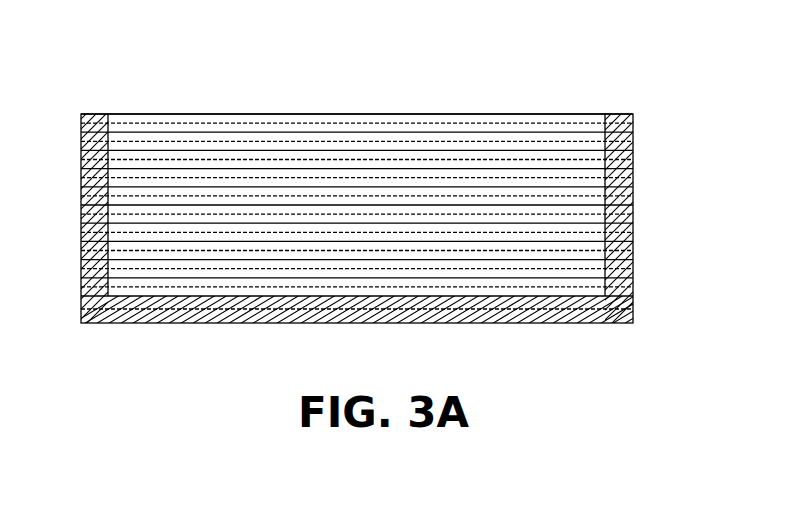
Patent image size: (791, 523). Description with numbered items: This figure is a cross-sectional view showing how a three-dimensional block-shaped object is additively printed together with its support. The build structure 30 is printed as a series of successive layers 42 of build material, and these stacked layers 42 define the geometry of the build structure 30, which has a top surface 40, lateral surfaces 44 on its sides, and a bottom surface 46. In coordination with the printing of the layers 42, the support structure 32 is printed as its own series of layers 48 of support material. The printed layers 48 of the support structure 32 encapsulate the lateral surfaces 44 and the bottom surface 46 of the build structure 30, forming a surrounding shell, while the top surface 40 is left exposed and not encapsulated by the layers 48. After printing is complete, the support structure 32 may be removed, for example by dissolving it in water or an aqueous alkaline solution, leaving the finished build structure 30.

The build structure 30 is at (432, 82).
The support structure 32 is at (647, 168).
The top surface 40 is at (278, 113).
The layers 42 is at (152, 143).
The lateral surfaces 44 is at (86, 200).
The bottom surface 46 is at (360, 298).
The layers 48 is at (81, 150).